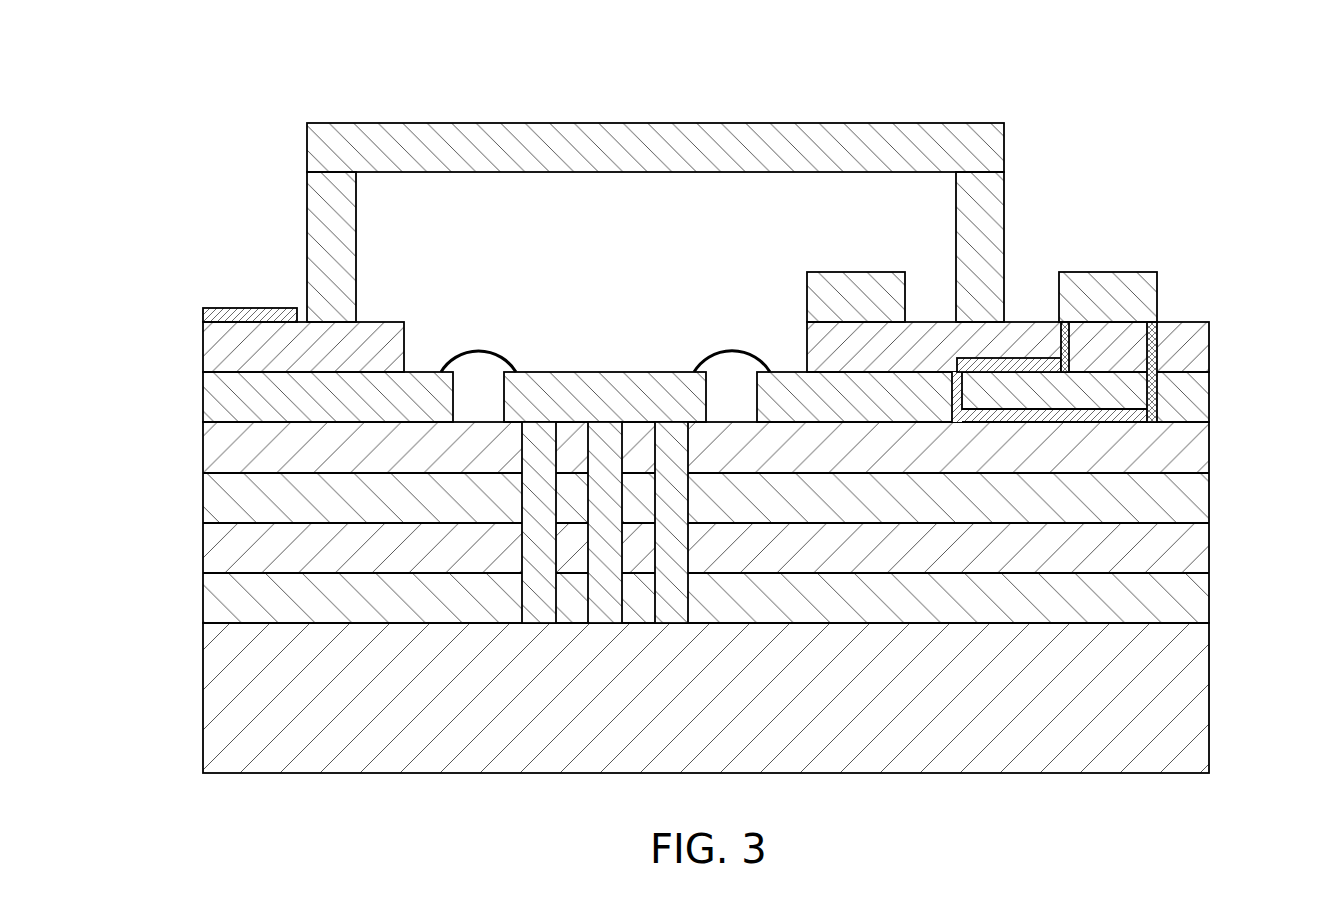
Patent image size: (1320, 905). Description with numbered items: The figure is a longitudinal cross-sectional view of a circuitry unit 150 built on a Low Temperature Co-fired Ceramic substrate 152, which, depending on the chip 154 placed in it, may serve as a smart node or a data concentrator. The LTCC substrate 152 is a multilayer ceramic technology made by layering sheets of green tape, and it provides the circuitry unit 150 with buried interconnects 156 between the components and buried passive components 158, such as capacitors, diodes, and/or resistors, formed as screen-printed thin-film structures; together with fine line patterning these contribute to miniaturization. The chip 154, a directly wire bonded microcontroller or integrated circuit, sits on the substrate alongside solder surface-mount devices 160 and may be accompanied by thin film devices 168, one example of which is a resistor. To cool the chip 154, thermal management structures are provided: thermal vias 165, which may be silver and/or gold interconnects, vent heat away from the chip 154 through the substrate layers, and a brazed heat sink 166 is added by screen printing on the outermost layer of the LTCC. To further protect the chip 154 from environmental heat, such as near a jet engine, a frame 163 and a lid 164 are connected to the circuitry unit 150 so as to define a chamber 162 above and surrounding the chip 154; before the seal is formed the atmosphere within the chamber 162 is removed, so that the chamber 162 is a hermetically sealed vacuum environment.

The circuitry unit 150 is at (1047, 115).
The LTCC substrate 152 is at (663, 442).
The chip 154 is at (605, 372).
The buried interconnects 156 is at (1158, 338).
The buried passive components 158 is at (1027, 356).
The surface-mount devices 160 is at (857, 272).
The hermetic sealed chamber 162 is at (356, 238).
The frame 163 is at (1004, 188).
The lid 164 is at (655, 122).
The thermal vias 165 is at (521, 557).
The heat sink 166 is at (1208, 700).
The thin film devices 168 is at (246, 307).